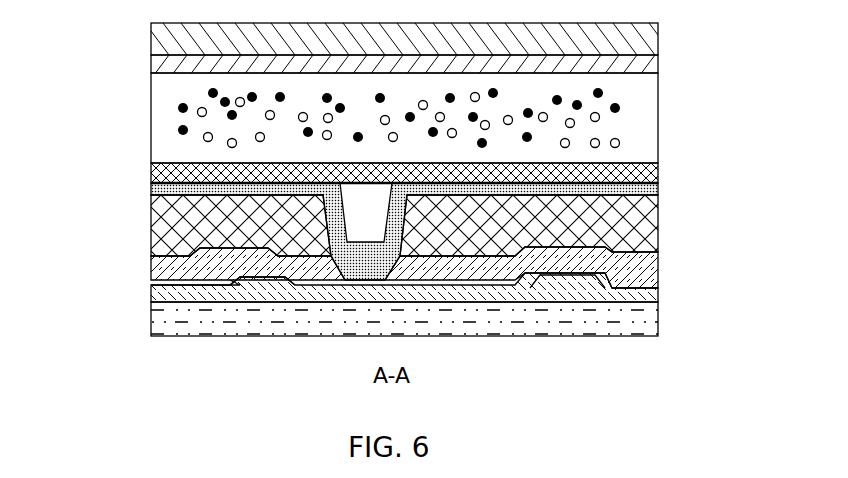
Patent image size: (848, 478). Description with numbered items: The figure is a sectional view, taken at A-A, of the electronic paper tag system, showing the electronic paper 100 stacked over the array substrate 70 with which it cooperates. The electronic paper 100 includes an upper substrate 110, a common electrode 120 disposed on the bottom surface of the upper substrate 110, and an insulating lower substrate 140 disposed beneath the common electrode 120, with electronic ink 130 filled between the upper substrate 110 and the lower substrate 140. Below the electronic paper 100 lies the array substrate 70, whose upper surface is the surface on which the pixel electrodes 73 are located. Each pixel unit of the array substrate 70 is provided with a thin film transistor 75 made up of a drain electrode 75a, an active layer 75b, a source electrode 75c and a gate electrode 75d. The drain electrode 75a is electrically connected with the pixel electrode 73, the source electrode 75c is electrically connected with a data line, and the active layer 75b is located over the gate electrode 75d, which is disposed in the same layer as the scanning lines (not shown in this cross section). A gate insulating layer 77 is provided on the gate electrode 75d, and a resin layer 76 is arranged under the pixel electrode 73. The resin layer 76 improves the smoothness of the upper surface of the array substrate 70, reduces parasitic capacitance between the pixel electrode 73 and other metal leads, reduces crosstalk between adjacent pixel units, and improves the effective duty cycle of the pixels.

The electronic paper 100 is at (53, 37).
The upper substrate 110 is at (163, 33).
The common electrode 120 is at (160, 63).
The electronic ink 130 is at (160, 115).
The lower substrate 140 is at (157, 173).
The array substrate 70 is at (677, 248).
The pixel electrode 73 is at (653, 188).
The resin layer 76 is at (653, 218).
The thin film transistor 75 is at (87, 182).
The drain electrode 75a is at (280, 270).
The active layer 75b is at (260, 278).
The source electrode 75c is at (220, 270).
The gate electrode 75d is at (248, 298).
The gate insulating layer 77 is at (650, 293).